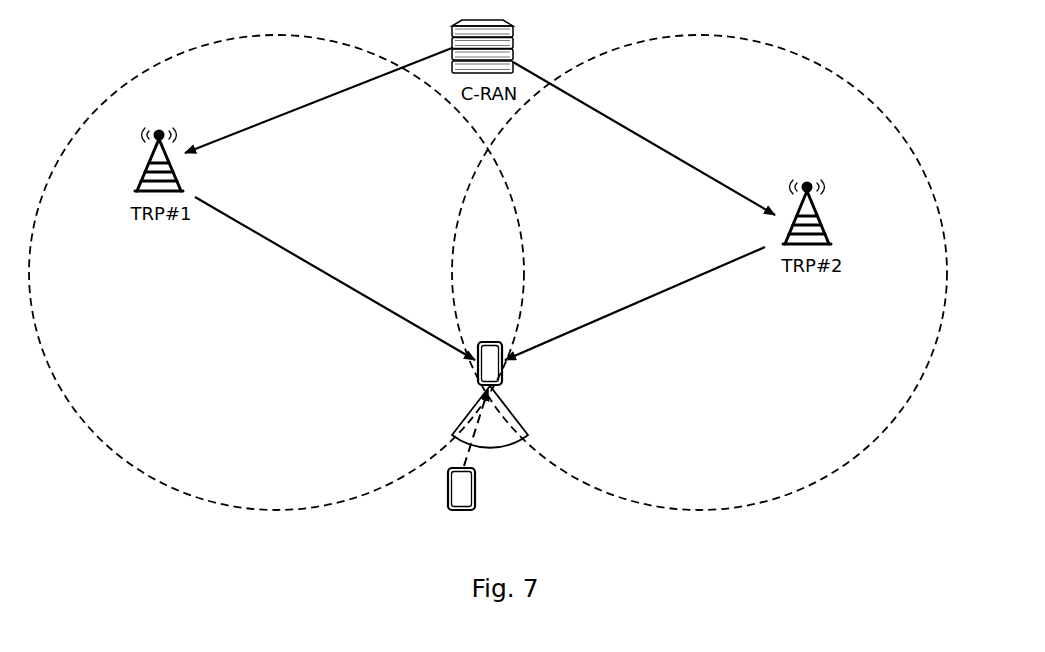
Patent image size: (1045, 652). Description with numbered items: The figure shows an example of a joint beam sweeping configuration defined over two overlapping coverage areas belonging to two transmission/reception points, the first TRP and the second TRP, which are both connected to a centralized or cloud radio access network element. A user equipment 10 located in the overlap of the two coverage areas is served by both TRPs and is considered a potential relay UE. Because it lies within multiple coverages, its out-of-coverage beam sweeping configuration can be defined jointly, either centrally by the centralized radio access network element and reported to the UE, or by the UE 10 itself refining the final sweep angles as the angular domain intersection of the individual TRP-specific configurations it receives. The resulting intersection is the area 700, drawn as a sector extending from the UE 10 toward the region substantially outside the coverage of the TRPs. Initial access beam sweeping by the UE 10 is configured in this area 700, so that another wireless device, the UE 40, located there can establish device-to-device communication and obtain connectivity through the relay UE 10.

The user equipment 10 is at (477, 372).
The UE 40 is at (455, 502).
The area 700 is at (517, 438).